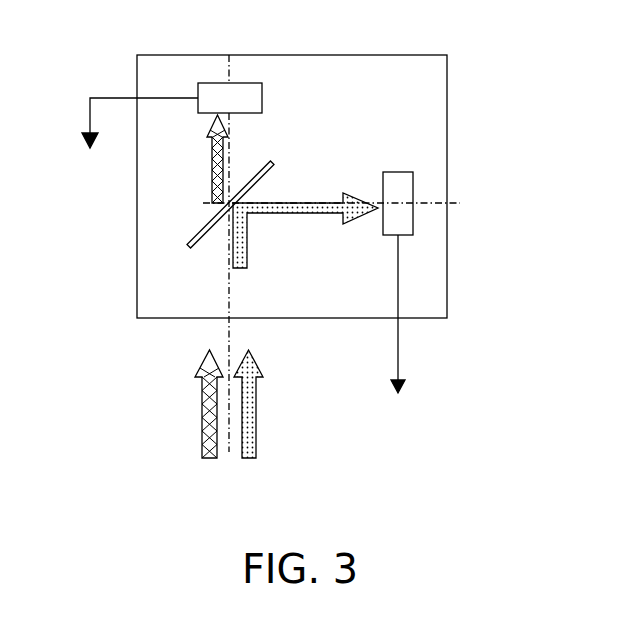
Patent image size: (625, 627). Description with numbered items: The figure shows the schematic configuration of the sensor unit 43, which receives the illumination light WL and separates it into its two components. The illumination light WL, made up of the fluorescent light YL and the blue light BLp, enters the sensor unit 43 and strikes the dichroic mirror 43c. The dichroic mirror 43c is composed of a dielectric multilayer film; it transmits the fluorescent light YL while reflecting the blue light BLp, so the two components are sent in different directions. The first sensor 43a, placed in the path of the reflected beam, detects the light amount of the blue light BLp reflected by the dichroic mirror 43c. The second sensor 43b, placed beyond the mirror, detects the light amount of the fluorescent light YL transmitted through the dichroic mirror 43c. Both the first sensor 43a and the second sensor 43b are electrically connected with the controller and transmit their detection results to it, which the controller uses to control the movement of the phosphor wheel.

The sensor unit 43 is at (447, 82).
The first sensor 43a is at (402, 227).
The second sensor 43b is at (245, 95).
The dichroic mirror 43c is at (194, 237).
The fluorescent light YL is at (223, 138).
The blue light BLp is at (298, 213).
The illumination light WL is at (367, 445).